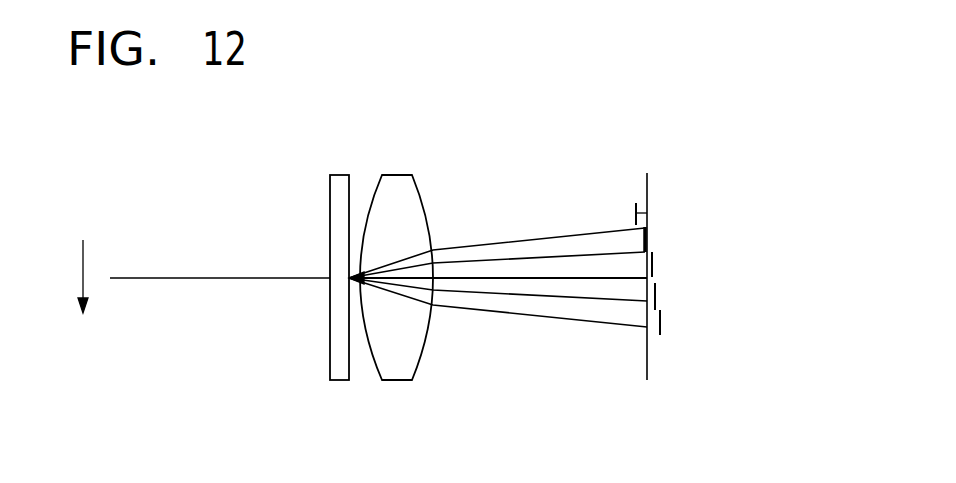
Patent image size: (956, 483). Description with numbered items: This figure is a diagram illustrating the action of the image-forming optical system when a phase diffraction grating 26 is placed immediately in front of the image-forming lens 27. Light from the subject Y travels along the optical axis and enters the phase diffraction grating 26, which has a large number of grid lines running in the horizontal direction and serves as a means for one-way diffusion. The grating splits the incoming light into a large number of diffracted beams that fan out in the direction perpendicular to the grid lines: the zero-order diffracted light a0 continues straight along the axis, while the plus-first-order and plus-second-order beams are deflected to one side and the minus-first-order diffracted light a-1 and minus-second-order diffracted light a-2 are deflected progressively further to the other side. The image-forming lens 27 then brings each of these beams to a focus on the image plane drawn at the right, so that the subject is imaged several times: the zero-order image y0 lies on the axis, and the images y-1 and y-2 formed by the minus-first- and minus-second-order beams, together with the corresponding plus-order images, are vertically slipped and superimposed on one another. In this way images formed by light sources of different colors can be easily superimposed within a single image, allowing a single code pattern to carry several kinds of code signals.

The phase diffraction grating 26 is at (330, 308).
The image-forming lens 27 is at (373, 190).
The subject Y is at (103, 285).
The 0-order diffracted light a0 is at (465, 278).
The −1-order diffracted light a-1 is at (513, 296).
The −2-order diffracted light a-2 is at (597, 323).
The image formed by 0-order diffracted light y0 is at (652, 263).
The image formed by −1-order diffracted light y-1 is at (655, 293).
The image formed by −2-order diffracted light y-2 is at (660, 322).